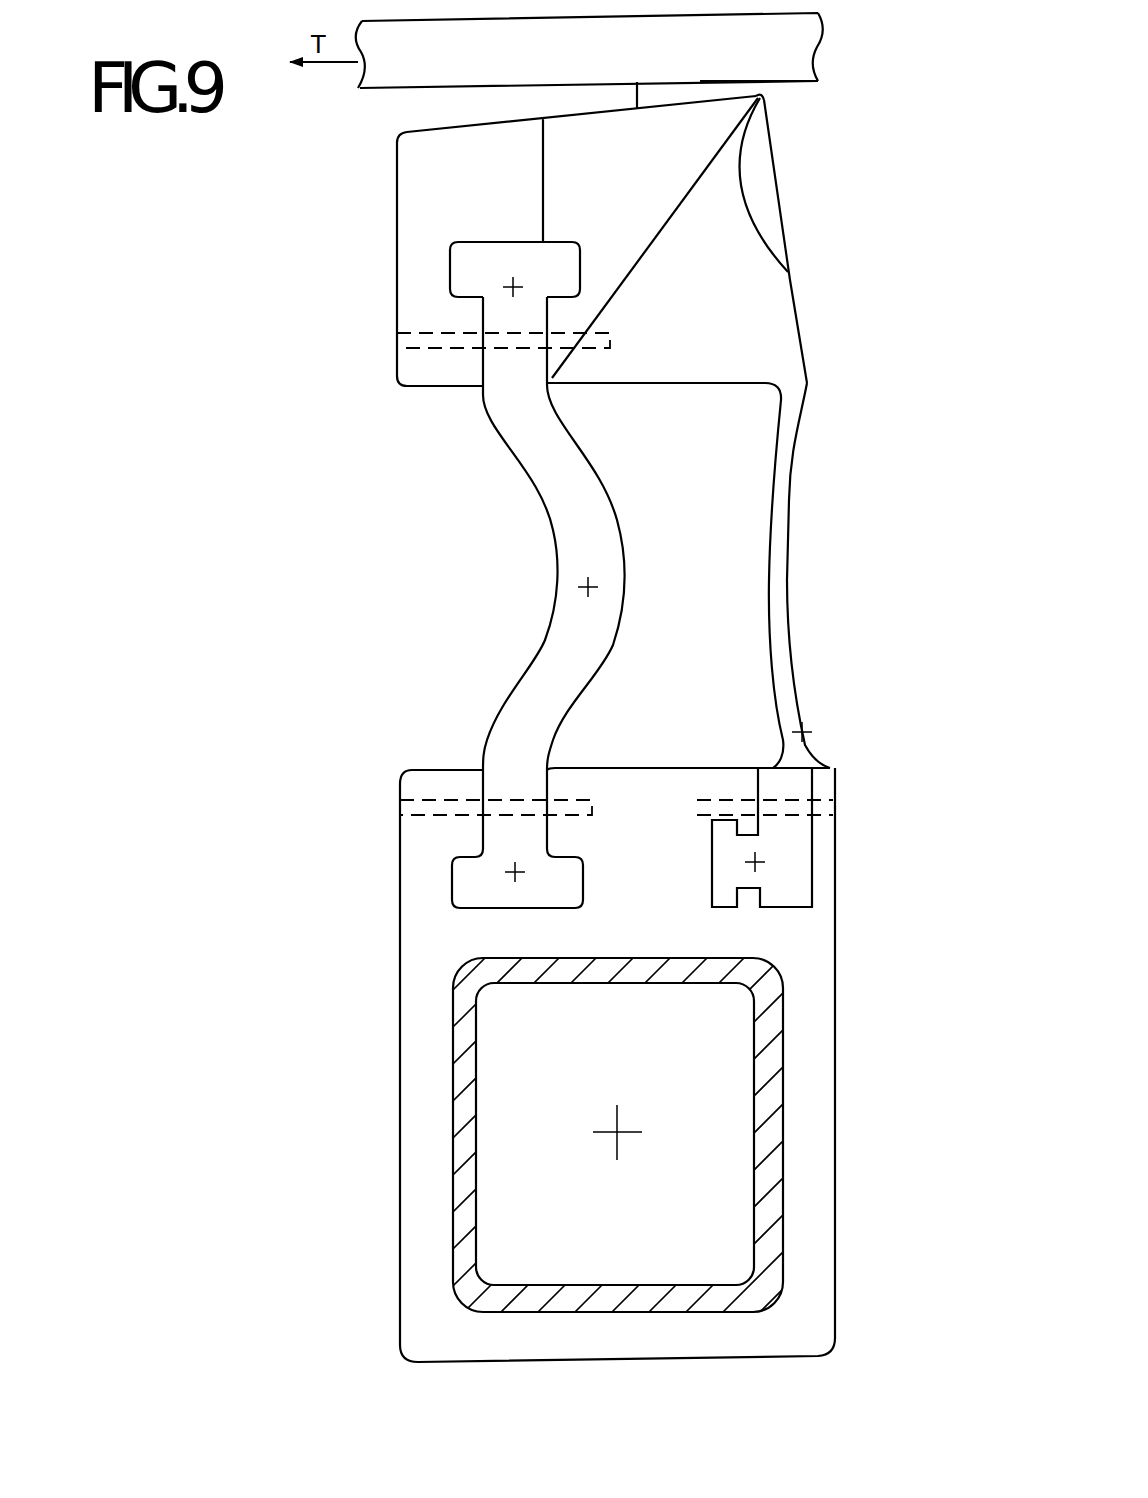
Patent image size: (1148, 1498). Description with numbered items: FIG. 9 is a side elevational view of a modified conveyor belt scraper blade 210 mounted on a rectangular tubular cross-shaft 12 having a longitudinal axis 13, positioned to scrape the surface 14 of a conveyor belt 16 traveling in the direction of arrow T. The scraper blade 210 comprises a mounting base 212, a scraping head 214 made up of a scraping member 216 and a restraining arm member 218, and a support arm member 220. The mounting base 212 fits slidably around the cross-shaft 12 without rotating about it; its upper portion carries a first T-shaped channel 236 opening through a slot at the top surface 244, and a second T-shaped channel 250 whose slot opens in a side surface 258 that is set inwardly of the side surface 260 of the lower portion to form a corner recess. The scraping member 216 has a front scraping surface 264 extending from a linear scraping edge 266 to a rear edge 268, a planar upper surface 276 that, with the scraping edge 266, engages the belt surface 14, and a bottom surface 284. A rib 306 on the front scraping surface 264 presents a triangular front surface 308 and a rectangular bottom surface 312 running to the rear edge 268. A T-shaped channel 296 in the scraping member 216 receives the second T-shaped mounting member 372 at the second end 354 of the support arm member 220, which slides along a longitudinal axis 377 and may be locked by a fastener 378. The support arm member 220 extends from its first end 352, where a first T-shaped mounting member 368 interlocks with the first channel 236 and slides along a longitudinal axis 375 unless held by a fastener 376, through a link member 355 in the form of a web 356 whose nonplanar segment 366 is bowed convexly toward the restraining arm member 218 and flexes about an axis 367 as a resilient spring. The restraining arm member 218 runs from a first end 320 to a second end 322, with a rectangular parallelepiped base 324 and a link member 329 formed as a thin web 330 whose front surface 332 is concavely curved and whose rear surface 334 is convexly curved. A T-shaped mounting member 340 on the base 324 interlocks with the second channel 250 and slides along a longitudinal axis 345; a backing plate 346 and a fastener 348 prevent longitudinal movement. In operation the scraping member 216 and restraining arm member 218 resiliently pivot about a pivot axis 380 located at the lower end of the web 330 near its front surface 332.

The cross-shaft 12 is at (468, 1097).
The longitudinal axis 13 is at (618, 1131).
The surface 14 is at (806, 96).
The conveyor belt 16 is at (821, 43).
The conveyor belt scraper blade 210 is at (851, 256).
The mounting base 212 is at (839, 1152).
The scraping head 214 is at (789, 202).
The scraping member 216 is at (396, 176).
The restraining arm member 218 is at (794, 521).
The support arm member 220 is at (538, 506).
The first T-shaped channel 236 is at (434, 851).
The top surface 244 is at (617, 768).
The second T-shaped channel 250 is at (712, 910).
The side surface 258 is at (762, 788).
The side surface 260 is at (836, 1045).
The front scraping surface 264 is at (650, 262).
The scraping edge 266 is at (769, 94).
The rear edge 268 is at (549, 379).
The upper surface 276 is at (637, 82).
The bottom surface 284 is at (429, 388).
The channel 296 is at (440, 310).
The rib 306 is at (763, 303).
The front surface 308 is at (795, 312).
The bottom surface 312 is at (675, 386).
The first end 320 is at (792, 890).
The second end 322 is at (808, 388).
The base 324 is at (797, 878).
The link member 329 is at (790, 553).
The web 330 is at (777, 595).
The front surface 332 is at (790, 613).
The rear surface 334 is at (768, 630).
The T-shaped mounting member 340 is at (723, 873).
The longitudinal axis 345 is at (759, 862).
The backing plate 346 is at (830, 780).
The fastener 348 is at (700, 803).
The first end 352 is at (493, 893).
The second end 354 is at (513, 262).
The link member 355 is at (548, 641).
The web 356 is at (595, 636).
The nonplanar segment 366 is at (625, 567).
The axis 367 is at (596, 591).
The first T-shaped mounting member 368 is at (515, 893).
The second T-shaped mounting member 372 is at (542, 275).
The longitudinal axis 375 is at (519, 872).
The fastener 376 is at (440, 800).
The longitudinal axis 377 is at (520, 305).
The fastener 378 is at (405, 352).
The pivot axis 380 is at (806, 736).